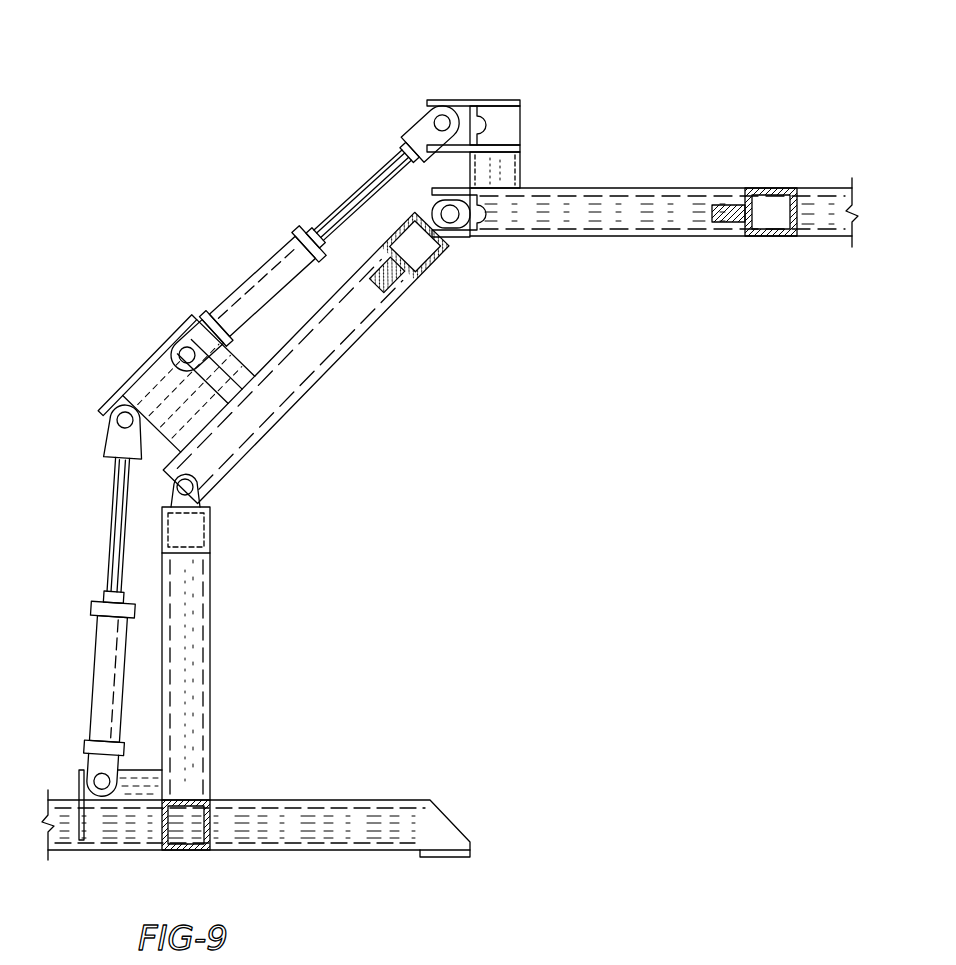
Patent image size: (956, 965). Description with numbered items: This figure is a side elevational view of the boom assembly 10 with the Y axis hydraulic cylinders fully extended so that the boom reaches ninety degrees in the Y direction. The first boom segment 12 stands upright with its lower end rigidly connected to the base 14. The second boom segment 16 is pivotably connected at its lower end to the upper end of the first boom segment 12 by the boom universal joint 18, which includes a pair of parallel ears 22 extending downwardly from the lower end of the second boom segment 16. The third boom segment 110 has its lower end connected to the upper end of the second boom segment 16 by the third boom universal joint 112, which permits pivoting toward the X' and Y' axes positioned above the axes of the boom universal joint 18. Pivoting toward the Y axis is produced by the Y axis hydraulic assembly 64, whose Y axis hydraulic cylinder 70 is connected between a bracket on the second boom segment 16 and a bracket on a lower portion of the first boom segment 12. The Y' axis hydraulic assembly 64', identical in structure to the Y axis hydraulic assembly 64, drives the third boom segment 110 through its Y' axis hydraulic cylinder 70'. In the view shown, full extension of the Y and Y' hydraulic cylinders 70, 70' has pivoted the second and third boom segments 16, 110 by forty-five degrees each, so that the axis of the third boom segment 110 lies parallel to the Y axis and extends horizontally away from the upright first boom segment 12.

The boom assembly 10 is at (252, 185).
The first boom segment 12 is at (213, 693).
The base 14 is at (293, 798).
The second boom segment 16 is at (337, 372).
The boom universal joint 18 is at (248, 504).
The parallel ears 22 is at (170, 498).
The Y axis hydraulic assembly 64 is at (145, 393).
The Y' axis hydraulic assembly 64' is at (451, 98).
The Y axis hydraulic cylinder 70 is at (99, 622).
The Y' axis hydraulic cylinder 70' is at (310, 239).
The third boom segment 110 is at (660, 240).
The third boom universal joint 112 is at (465, 262).